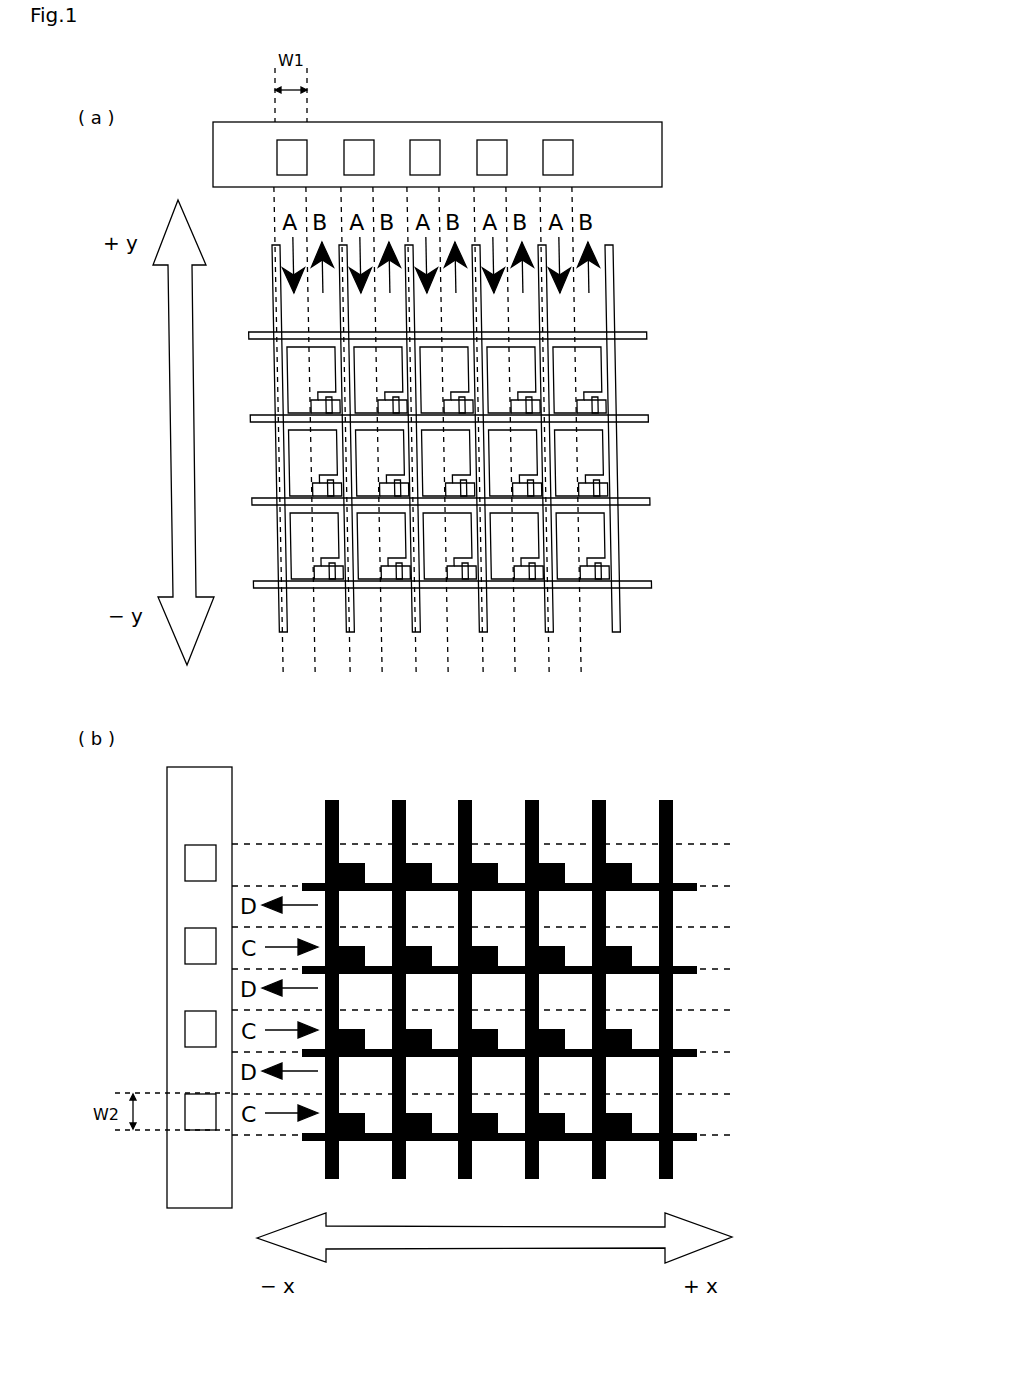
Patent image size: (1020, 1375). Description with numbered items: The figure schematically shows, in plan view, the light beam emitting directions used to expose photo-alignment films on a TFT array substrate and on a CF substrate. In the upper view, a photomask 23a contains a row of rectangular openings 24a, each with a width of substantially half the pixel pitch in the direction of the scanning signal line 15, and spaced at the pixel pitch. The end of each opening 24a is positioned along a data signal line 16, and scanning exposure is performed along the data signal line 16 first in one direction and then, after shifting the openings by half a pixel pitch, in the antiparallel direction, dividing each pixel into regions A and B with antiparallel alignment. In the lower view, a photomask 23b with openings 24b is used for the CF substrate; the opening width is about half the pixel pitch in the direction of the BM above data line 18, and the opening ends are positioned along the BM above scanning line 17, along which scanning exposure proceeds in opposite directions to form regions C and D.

The scanning signal line 15 is at (645, 336).
The data signal line 16 is at (614, 606).
The BM above scanning line 17 is at (700, 885).
The BM above data line 18 is at (668, 795).
The photomask 23a is at (648, 163).
The photomask 23b is at (218, 783).
The opening 24a is at (560, 150).
The opening 24b is at (190, 864).